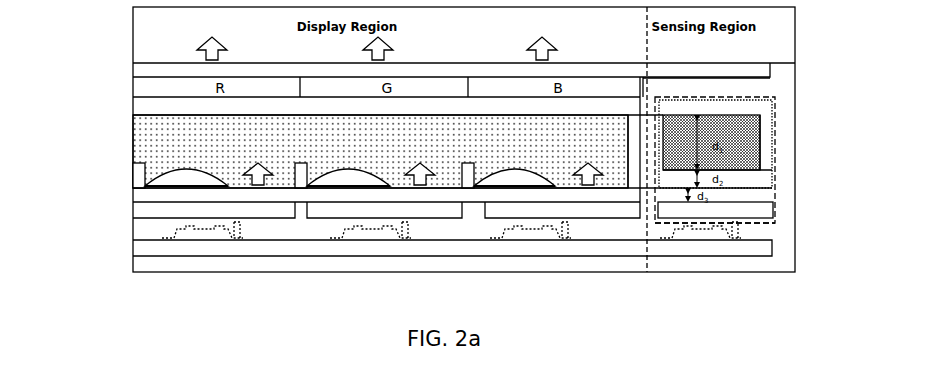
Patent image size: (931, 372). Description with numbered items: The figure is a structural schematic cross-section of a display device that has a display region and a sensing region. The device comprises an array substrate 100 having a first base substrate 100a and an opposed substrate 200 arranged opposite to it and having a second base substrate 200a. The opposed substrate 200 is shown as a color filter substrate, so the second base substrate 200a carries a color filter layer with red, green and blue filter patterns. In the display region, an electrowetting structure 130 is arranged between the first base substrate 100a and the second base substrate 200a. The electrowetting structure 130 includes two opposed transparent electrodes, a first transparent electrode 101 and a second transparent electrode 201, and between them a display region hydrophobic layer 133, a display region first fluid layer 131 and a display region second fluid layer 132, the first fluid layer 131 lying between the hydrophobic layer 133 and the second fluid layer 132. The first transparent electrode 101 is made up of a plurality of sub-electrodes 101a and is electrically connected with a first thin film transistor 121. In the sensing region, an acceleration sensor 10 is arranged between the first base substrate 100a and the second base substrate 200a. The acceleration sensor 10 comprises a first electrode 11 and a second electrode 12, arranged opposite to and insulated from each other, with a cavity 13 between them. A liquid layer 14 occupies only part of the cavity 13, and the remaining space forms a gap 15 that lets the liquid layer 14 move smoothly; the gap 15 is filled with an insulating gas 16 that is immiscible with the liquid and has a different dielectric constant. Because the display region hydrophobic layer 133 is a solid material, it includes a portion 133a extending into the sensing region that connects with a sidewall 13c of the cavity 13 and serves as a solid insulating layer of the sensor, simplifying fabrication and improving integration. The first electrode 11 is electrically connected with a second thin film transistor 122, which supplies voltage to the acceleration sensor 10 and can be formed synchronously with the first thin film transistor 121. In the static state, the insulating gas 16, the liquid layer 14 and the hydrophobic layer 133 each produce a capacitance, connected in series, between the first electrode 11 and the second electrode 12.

The opposed substrate 200 is at (428, 63).
The second base substrate 200a is at (755, 72).
The acceleration sensor 10 is at (755, 93).
The second electrode 12 is at (750, 108).
The cavity 13 is at (838, 113).
The sidewall of the cavity 13c is at (762, 120).
The insulating gas 16 is at (740, 145).
The gap 15 is at (777, 162).
The liquid layer 14 is at (743, 182).
The portion of the display region hydrophobic layer extending to the sensing region 133a is at (757, 199).
The first electrode 11 is at (775, 220).
The second thin film transistor 122 is at (705, 238).
The first base substrate 100a is at (755, 250).
The array substrate 100 is at (545, 257).
The first transparent electrode 101 is at (133, 220).
The sub-electrode 101a is at (443, 215).
The first thin film transistor 121 is at (195, 236).
The electrowetting structure 130 is at (63, 113).
The second transparent electrode 201 is at (148, 107).
The display region second fluid layer 132 is at (170, 140).
The display region first fluid layer 131 is at (185, 178).
The display region hydrophobic layer 133 is at (165, 197).